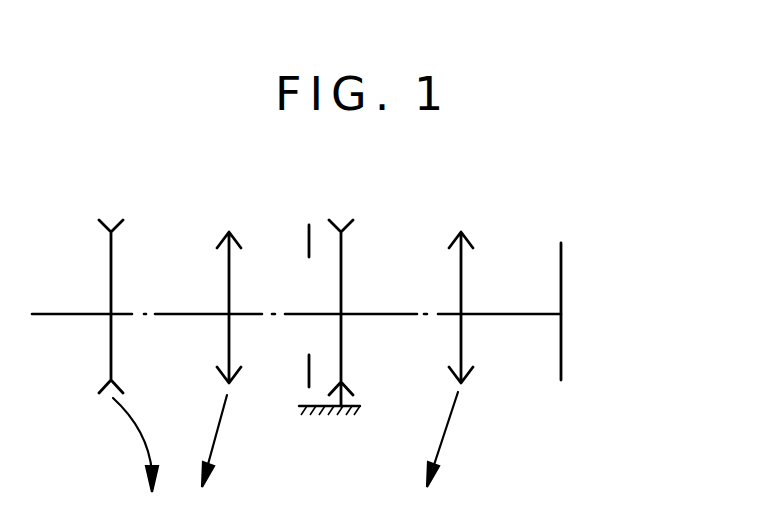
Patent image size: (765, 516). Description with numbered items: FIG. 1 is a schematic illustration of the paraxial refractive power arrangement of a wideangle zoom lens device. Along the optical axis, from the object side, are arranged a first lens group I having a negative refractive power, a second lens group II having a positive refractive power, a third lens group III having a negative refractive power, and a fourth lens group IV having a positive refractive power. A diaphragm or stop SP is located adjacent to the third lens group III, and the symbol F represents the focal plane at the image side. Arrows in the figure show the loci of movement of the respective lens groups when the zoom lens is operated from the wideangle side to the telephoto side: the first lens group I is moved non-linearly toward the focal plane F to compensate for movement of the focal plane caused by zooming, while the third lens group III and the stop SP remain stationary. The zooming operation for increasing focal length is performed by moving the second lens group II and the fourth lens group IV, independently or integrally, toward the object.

The first lens group I is at (114, 257).
The second lens group II is at (227, 272).
The third lens group III is at (343, 258).
The fourth lens group IV is at (463, 277).
The stop SP is at (307, 238).
The focal plane F is at (563, 260).